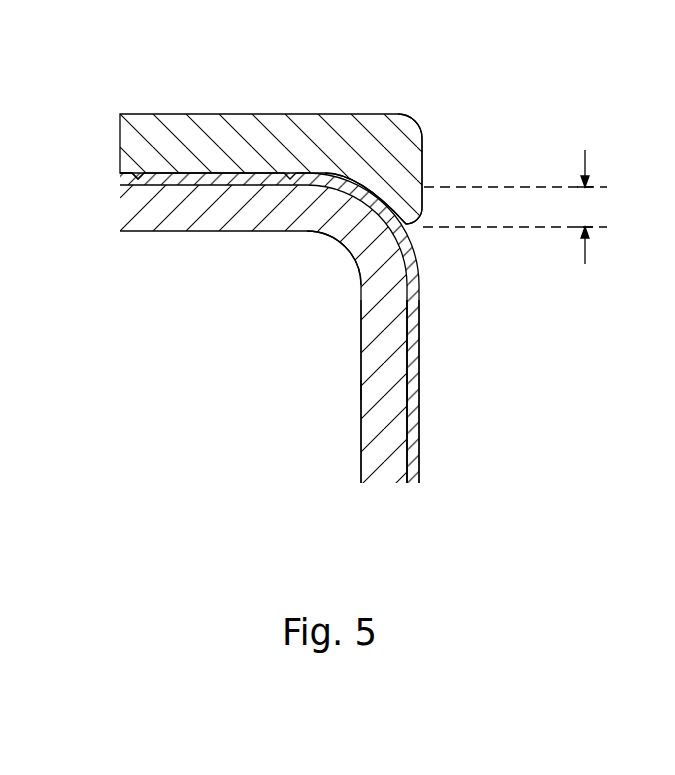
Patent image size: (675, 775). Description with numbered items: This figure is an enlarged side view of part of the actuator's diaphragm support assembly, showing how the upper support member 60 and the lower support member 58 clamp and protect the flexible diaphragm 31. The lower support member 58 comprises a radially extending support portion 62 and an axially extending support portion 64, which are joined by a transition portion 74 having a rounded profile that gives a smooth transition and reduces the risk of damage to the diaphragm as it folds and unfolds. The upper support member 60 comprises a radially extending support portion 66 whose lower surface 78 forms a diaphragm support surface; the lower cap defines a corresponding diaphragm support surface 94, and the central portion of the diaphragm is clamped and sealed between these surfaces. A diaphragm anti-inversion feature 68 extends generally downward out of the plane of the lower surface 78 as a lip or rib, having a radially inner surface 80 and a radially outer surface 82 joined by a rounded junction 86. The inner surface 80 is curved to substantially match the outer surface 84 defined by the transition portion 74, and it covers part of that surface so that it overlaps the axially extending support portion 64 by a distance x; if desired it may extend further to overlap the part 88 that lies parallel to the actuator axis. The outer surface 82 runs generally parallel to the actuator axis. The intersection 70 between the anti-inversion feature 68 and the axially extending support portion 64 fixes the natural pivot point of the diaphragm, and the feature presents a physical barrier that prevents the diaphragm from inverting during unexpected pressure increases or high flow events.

The upper support member 60 is at (283, 82).
The radially extending support portion 66 is at (177, 114).
The outer surface 84 is at (392, 233).
The radially outer surface 82 is at (424, 146).
The diaphragm anti-inversion feature 68 is at (455, 158).
The diaphragm support surface 94 is at (117, 181).
The junction 86 is at (412, 224).
The transition portion 74 is at (418, 229).
The intersection 70 is at (447, 258).
The flexible diaphragm 31 is at (420, 328).
The part of the axially extending portion 88 is at (395, 394).
The axially extending support portion 64 is at (349, 445).
The radially extending support portion 62 is at (165, 232).
The lower support member 58 is at (245, 264).
The lower surface 78 is at (297, 186).
The radially inner surface 80 is at (352, 215).
The distance x is at (515, 207).